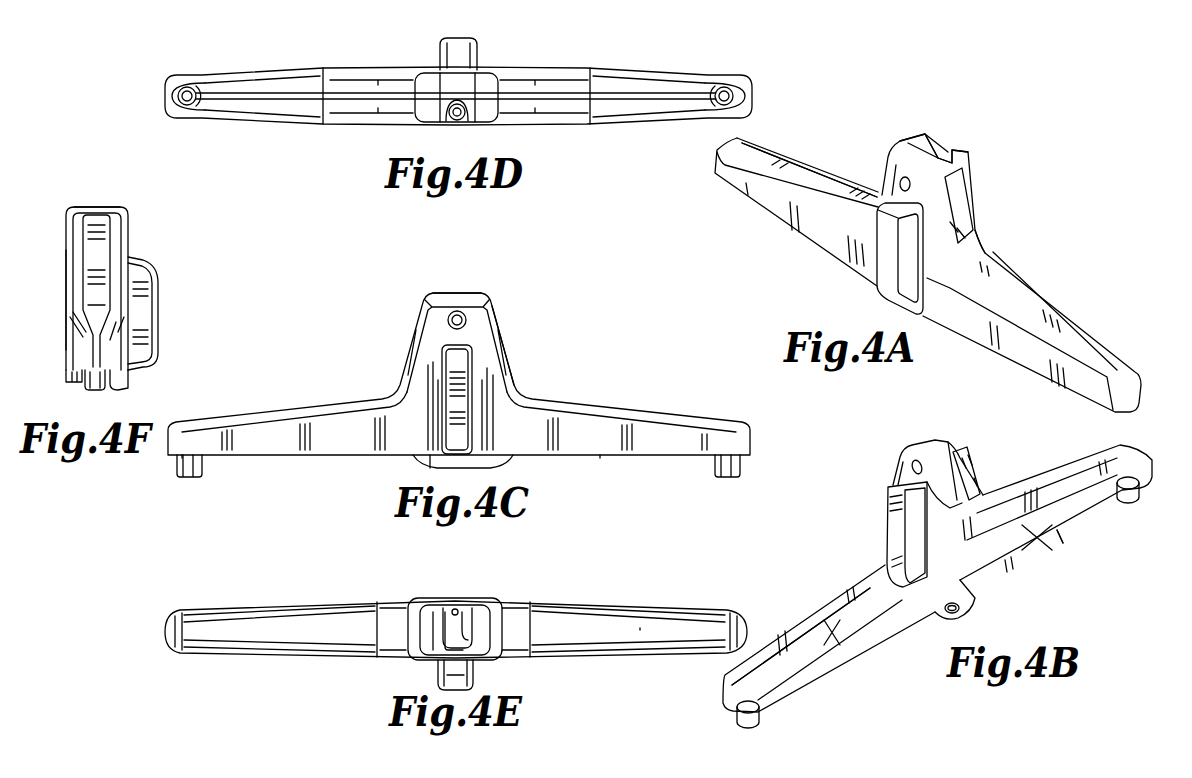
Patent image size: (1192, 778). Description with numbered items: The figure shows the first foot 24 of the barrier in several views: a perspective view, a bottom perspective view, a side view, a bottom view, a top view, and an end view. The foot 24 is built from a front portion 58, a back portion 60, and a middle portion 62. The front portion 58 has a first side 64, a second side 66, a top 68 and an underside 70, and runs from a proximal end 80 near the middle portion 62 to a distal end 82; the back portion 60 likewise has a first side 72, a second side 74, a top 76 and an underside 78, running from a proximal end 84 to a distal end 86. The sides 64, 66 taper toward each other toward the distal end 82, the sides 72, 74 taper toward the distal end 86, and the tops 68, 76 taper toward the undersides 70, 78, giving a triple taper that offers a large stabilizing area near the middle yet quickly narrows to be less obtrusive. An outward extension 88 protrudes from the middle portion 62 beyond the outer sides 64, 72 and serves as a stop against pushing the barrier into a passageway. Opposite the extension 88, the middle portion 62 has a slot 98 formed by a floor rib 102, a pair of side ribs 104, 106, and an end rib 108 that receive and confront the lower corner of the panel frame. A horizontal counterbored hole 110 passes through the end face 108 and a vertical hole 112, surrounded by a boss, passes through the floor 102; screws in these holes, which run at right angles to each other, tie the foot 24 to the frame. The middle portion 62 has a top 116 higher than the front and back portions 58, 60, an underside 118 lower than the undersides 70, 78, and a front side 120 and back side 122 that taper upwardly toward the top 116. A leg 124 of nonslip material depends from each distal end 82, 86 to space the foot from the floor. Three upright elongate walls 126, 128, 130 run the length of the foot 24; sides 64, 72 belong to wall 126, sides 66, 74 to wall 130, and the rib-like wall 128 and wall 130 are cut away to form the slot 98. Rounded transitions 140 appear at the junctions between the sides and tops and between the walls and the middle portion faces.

In FIG. 4D, the first foot 24 is at (701, 134).
In FIG. 4C, the first foot 24 is at (691, 463).
In FIG. 4E, the first foot 24 is at (682, 662).
In FIG. 4F, the first foot 24 is at (61, 230).
In FIG. 4A, the first foot 24 is at (1080, 313).
In FIG. 4B, the first foot 24 is at (1062, 456).
In FIG. 4C, the front portion 58 is at (300, 402).
In FIG. 4F, the front portion 58 is at (66, 247).
In FIG. 4A, the front portion 58 is at (757, 200).
In FIG. 4C, the back portion 60 is at (673, 408).
In FIG. 4A, the back portion 60 is at (1053, 382).
In FIG. 4C, the middle portion 62 is at (503, 328).
In FIG. 4B, the middle portion 62 is at (947, 445).
In FIG. 4D, the first side 64 is at (255, 73).
In FIG. 4E, the first side 64 is at (238, 655).
In FIG. 4D, the second side 66 is at (262, 124).
In FIG. 4E, the second side 66 is at (248, 603).
In FIG. 4C, the top side 68 is at (344, 395).
In FIG. 4E, the top side 68 is at (315, 623).
In FIG. 4F, the top side 68 is at (70, 340).
In FIG. 4A, the top side 68 is at (827, 180).
In FIG. 4C, the underside 70 is at (299, 458).
In FIG. 4D, the first side 72 is at (615, 72).
In FIG. 4E, the first side 72 is at (615, 657).
In FIG. 4D, the second side 74 is at (612, 124).
In FIG. 4E, the second side 74 is at (595, 602).
In FIG. 4C, the top side 76 is at (625, 404).
In FIG. 4E, the top side 76 is at (637, 630).
In FIG. 4A, the top side 76 is at (995, 262).
In FIG. 4C, the underside 78 is at (624, 458).
In FIG. 4C, the proximal end 80 is at (387, 391).
In FIG. 4C, the distal end 82 is at (188, 416).
In FIG. 4C, the proximal end 84 is at (552, 397).
In FIG. 4C, the distal end 86 is at (727, 414).
In FIG. 4D, the outward extension 88 is at (477, 43).
In FIG. 4C, the outward extension 88 is at (478, 418).
In FIG. 4E, the outward extension 88 is at (475, 675).
In FIG. 4F, the outward extension 88 is at (160, 293).
In FIG. 4A, the outward extension 88 is at (885, 298).
In FIG. 4B, the outward extension 88 is at (890, 517).
In FIG. 4A, the slot 98 is at (951, 133).
In FIG. 4E, the floor rib 102 is at (465, 612).
In FIG. 4B, the floor rib 102 is at (975, 595).
In FIG. 4E, the side rib 104 is at (417, 602).
In FIG. 4E, the side rib 106 is at (468, 615).
In FIG. 4E, the end rib 108 is at (437, 643).
In FIG. 4C, the counterbored hole 110 is at (458, 308).
In FIG. 4E, the vertically extending hole 112 is at (453, 608).
In FIG. 4F, the vertically extending hole 112 is at (78, 386).
In FIG. 4C, the top edge 116 is at (472, 292).
In FIG. 4F, the top edge 116 is at (98, 204).
In FIG. 4B, the top edge 116 is at (925, 447).
In FIG. 4C, the underside 118 is at (450, 470).
In FIG. 4C, the front side 120 is at (418, 333).
In FIG. 4F, the front side 120 is at (108, 227).
In FIG. 4D, the back side 122 is at (458, 122).
In FIG. 4C, the back side 122 is at (505, 342).
In FIG. 4D, the leg 124 is at (198, 105).
In FIG. 4C, the leg 124 is at (745, 466).
In FIG. 4F, the leg 124 is at (128, 381).
In FIG. 4B, the wall 126 is at (778, 640).
In FIG. 4D, the wall 128 is at (367, 83).
In FIG. 4B, the wall 128 is at (1060, 532).
In FIG. 4B, the wall 130 is at (842, 673).
In FIG. 4A, the rounded transition 140 is at (753, 158).